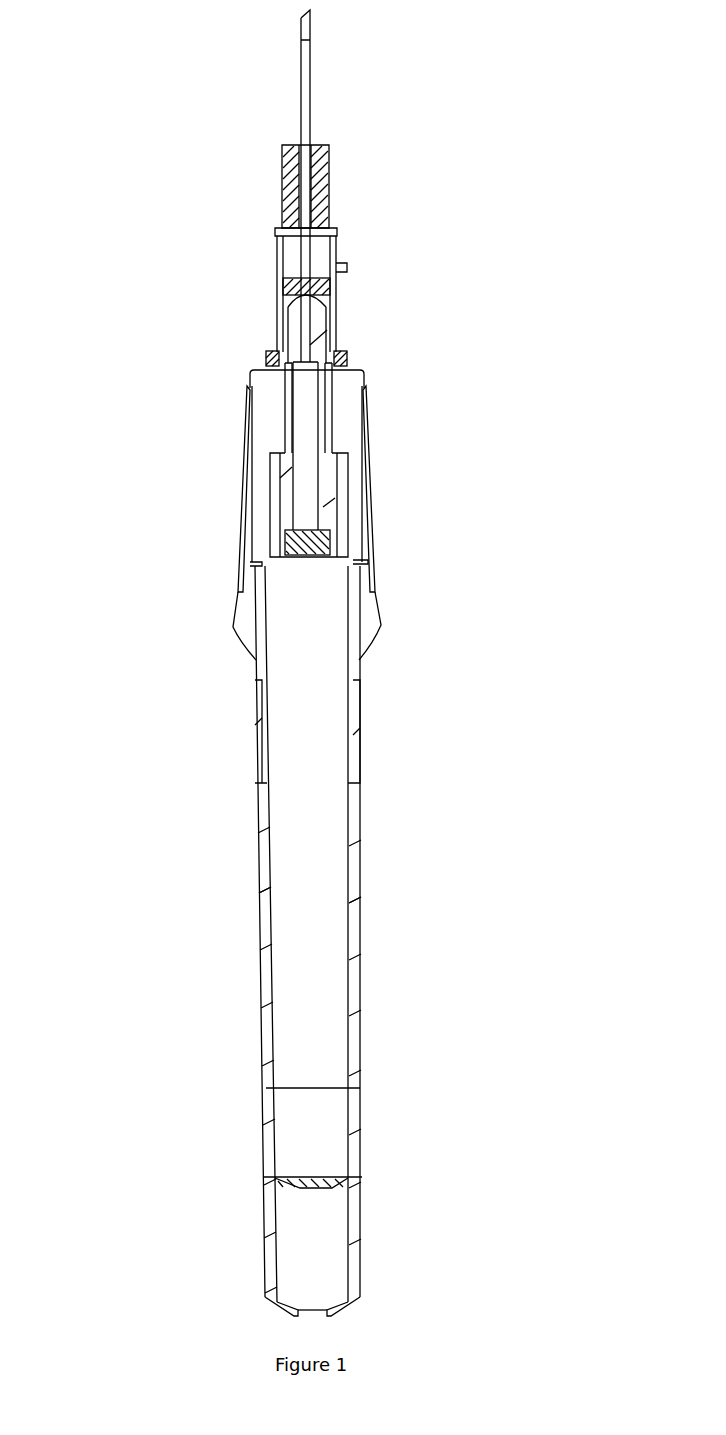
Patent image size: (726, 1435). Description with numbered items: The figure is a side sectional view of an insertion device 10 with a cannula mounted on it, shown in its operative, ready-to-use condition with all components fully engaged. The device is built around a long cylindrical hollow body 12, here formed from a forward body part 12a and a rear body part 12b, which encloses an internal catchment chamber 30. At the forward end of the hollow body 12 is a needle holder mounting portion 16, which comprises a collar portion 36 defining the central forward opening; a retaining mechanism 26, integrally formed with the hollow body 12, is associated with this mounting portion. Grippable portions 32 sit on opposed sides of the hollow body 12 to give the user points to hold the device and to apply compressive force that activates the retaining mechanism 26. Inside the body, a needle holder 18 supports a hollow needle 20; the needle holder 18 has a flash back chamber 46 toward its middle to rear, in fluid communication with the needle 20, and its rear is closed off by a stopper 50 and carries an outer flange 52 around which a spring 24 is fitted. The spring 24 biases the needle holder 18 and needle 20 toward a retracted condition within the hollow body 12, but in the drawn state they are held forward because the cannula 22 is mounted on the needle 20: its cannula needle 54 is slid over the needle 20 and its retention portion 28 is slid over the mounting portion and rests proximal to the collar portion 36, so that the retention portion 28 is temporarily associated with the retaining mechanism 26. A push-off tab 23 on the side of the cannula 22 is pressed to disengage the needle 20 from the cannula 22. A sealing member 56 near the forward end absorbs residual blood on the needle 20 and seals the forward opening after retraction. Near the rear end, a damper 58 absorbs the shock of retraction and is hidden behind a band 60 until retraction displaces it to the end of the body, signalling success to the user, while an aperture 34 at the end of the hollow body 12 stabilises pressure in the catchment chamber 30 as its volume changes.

The insertion device 10 is at (207, 902).
The hollow body 12 is at (254, 743).
The forward body part 12a is at (253, 668).
The rear body part 12b is at (270, 1003).
The needle holder mounting portion 16 is at (325, 412).
The needle holder 18 is at (310, 430).
The needle 20 is at (296, 22).
The cannula 22 is at (283, 173).
The push-off tab 23 is at (352, 265).
The spring 24 is at (367, 508).
The retaining mechanism 26 is at (288, 398).
The retention portion 28 is at (348, 354).
The catchment chamber 30 is at (311, 1048).
The grippable portions 32 is at (247, 502).
The aperture 34 is at (302, 1319).
The collar portion 36 is at (266, 367).
The flash back chamber 46 is at (338, 500).
The stopper 50 is at (260, 564).
The outer flange 52 is at (298, 503).
The cannula needle 54 is at (300, 90).
The sealing member 56 is at (288, 286).
The damper 58 is at (300, 1189).
The band 60 is at (286, 1140).